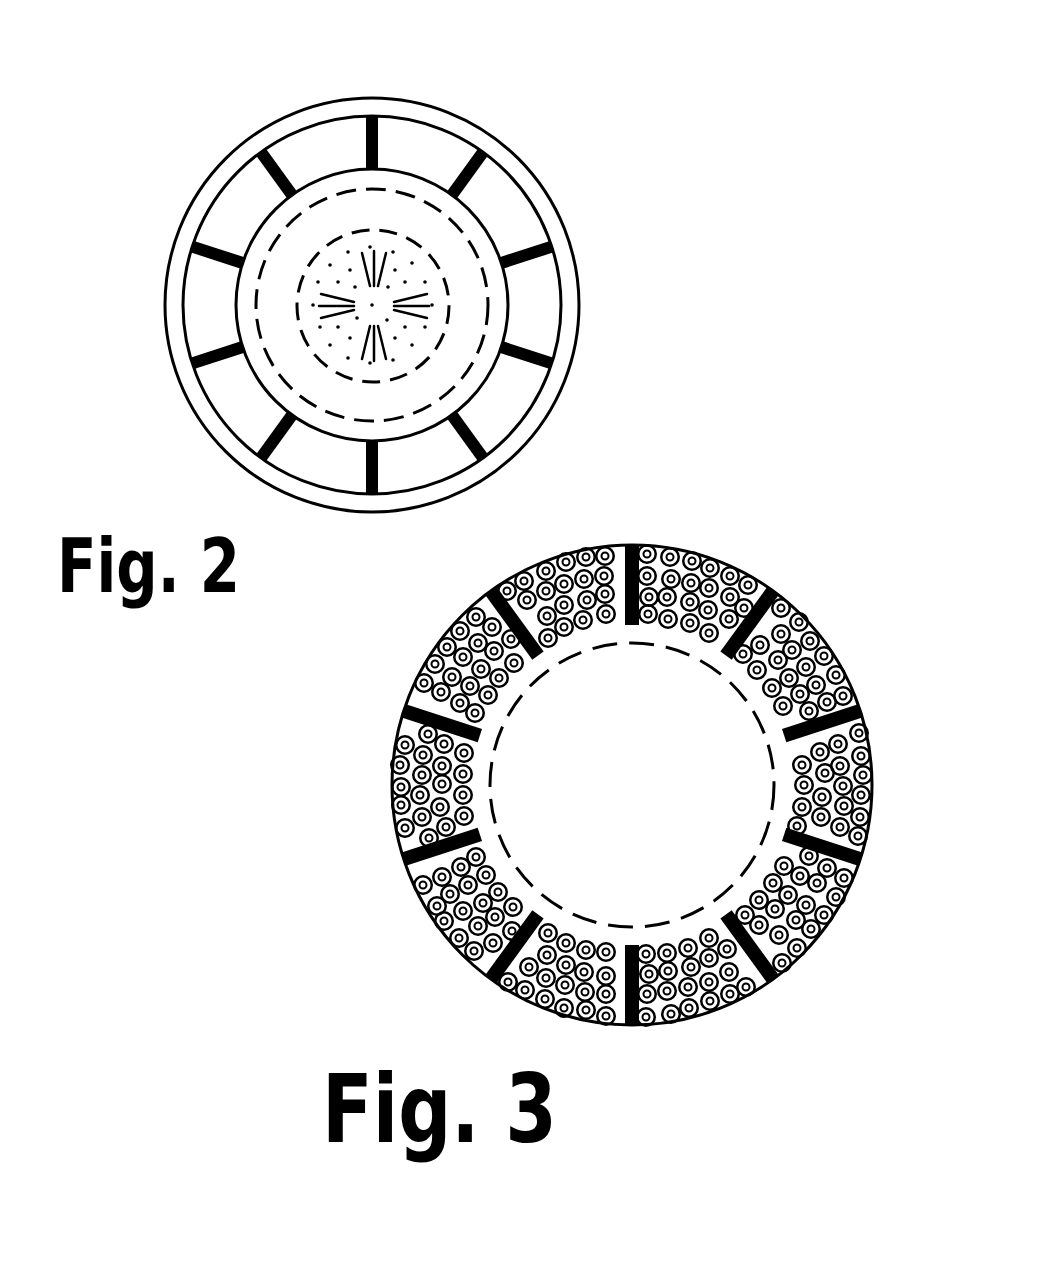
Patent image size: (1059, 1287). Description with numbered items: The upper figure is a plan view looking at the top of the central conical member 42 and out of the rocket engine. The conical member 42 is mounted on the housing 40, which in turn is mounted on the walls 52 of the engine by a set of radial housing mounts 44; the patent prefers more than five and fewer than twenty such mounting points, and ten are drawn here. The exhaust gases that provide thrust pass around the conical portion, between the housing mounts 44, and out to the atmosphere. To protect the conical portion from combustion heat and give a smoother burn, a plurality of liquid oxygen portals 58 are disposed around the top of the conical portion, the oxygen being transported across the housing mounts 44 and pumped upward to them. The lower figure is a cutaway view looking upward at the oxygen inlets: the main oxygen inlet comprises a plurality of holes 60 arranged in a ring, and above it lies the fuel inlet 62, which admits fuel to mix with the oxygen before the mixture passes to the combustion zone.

In FIG. 2, the housing 40 is at (417, 172).
In FIG. 2, the central conical member 42 is at (260, 247).
In FIG. 2, the housing mounts 44 is at (282, 167).
In FIG. 2, the walls 52 is at (512, 173).
In FIG. 2, the liquid oxygen portals 58 is at (327, 322).
In FIG. 3, the inner oxygen ring 60 is at (840, 905).
In FIG. 3, the fuel inlet 62 is at (573, 750).